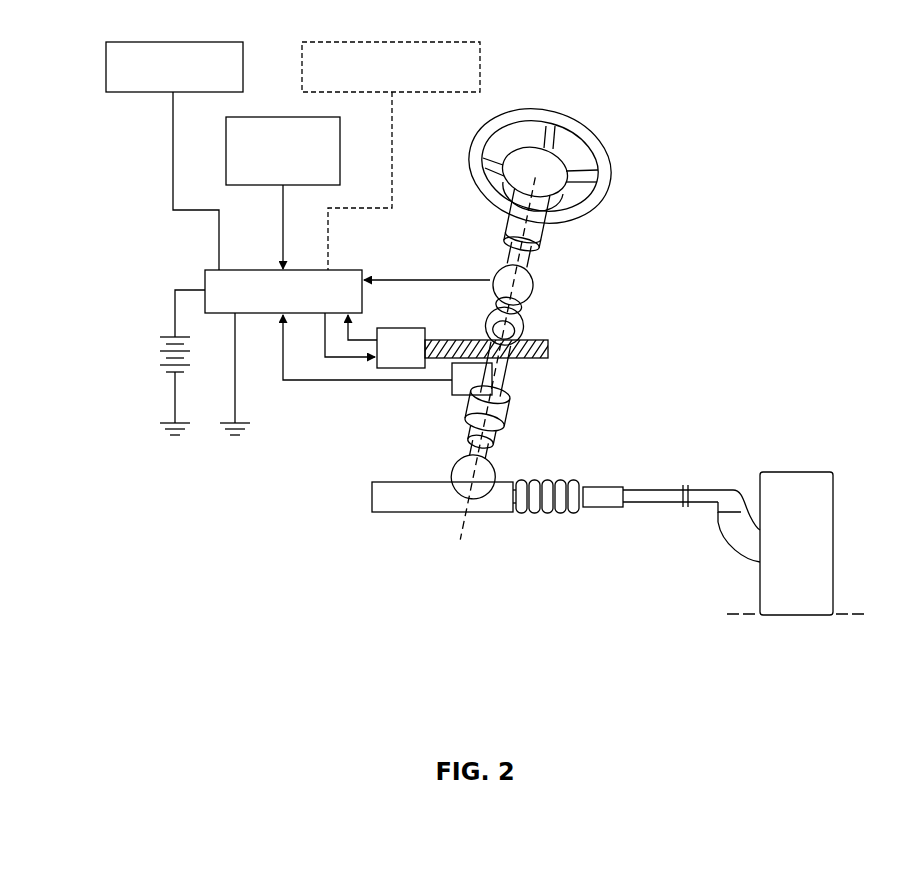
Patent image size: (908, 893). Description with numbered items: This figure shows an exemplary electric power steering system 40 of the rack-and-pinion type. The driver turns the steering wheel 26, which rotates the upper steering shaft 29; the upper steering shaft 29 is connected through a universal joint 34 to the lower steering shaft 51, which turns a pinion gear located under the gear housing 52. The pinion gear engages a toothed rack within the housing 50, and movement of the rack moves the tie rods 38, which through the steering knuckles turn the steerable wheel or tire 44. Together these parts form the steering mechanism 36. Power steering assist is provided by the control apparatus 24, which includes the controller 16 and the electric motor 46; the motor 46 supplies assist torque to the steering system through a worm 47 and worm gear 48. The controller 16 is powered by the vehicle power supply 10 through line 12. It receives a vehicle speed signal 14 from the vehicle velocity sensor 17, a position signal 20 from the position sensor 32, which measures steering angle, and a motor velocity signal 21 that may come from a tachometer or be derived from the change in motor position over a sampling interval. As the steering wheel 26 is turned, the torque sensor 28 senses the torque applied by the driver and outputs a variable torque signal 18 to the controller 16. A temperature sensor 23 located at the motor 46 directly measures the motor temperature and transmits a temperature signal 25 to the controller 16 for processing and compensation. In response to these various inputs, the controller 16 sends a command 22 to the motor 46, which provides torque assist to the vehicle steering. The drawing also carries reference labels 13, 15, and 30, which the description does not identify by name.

The vehicle power supply 10 is at (170, 355).
The line 12 is at (187, 284).
The storage media 13 is at (132, 95).
The vehicle speed signal 14 is at (281, 198).
The storage media connection line 15 is at (171, 143).
The controller 16 is at (262, 268).
The vehicle velocity sensor 17 is at (284, 115).
The variable torque signal 18 is at (431, 277).
The position signal 20 is at (371, 383).
The motor velocity signal 21 is at (357, 337).
The command 22 is at (342, 361).
The temperature sensor 23 is at (483, 78).
The control apparatus 24 is at (673, 270).
The temperature signal 25 is at (397, 140).
The steering wheel 26 is at (531, 284).
The torque sensor 28 is at (566, 130).
The upper steering shaft 29 is at (508, 250).
The tie rod 30 is at (648, 504).
The position sensor 32 is at (451, 391).
The universal joint 34 is at (509, 420).
The steering mechanism 36 is at (568, 475).
The tie rod 38 is at (735, 537).
The electric power steering system 40 is at (731, 345).
The steerable wheel 44 is at (787, 481).
The electric motor 46 is at (406, 326).
The worm 47 is at (551, 349).
The worm gear 48 is at (521, 325).
The housing 50 is at (398, 506).
The lower steering shaft 51 is at (495, 451).
The gear housing 52 is at (455, 470).